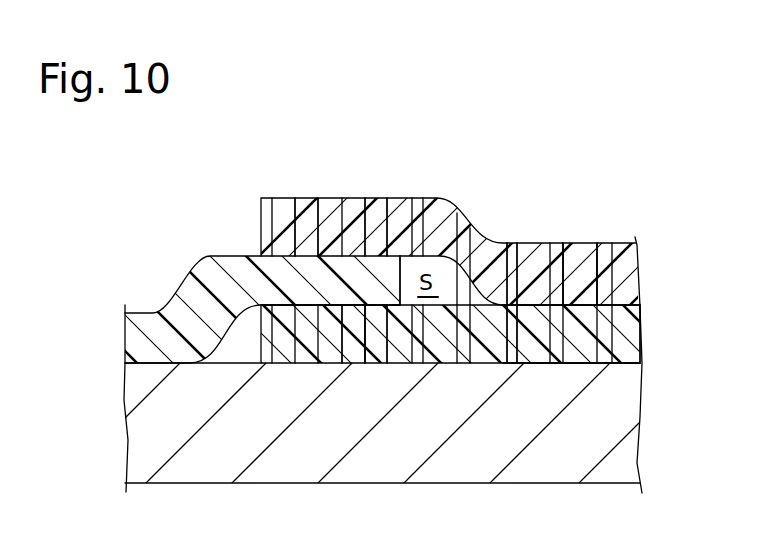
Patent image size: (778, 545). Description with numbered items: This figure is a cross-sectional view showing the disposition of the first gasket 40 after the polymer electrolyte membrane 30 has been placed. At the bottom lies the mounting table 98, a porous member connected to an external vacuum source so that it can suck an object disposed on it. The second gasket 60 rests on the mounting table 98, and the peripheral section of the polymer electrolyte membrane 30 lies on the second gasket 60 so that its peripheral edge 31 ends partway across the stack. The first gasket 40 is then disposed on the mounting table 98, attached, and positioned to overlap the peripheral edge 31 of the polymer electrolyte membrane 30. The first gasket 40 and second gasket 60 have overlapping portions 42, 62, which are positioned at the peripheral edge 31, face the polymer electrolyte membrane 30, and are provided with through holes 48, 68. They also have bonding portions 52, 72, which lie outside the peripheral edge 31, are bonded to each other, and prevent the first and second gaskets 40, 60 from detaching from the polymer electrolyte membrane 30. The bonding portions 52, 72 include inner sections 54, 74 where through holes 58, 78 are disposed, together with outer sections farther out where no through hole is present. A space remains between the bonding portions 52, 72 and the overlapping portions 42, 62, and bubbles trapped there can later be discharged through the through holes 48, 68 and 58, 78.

The polymer electrolyte membrane 30 is at (157, 325).
The peripheral edge 31 is at (397, 278).
The first gasket 40 is at (441, 152).
The overlapping portion 42 is at (310, 198).
The through hole 48 is at (380, 213).
The bonding portion 52 is at (587, 262).
The inner section 54 is at (580, 274).
The through hole 58 is at (513, 272).
The second gasket 60 is at (444, 417).
The overlapping portion 62 is at (362, 327).
The through hole 68 is at (385, 337).
The bonding portion 72 is at (579, 366).
The inner section 74 is at (571, 334).
The through hole 78 is at (515, 345).
The mounting table 98 is at (582, 457).